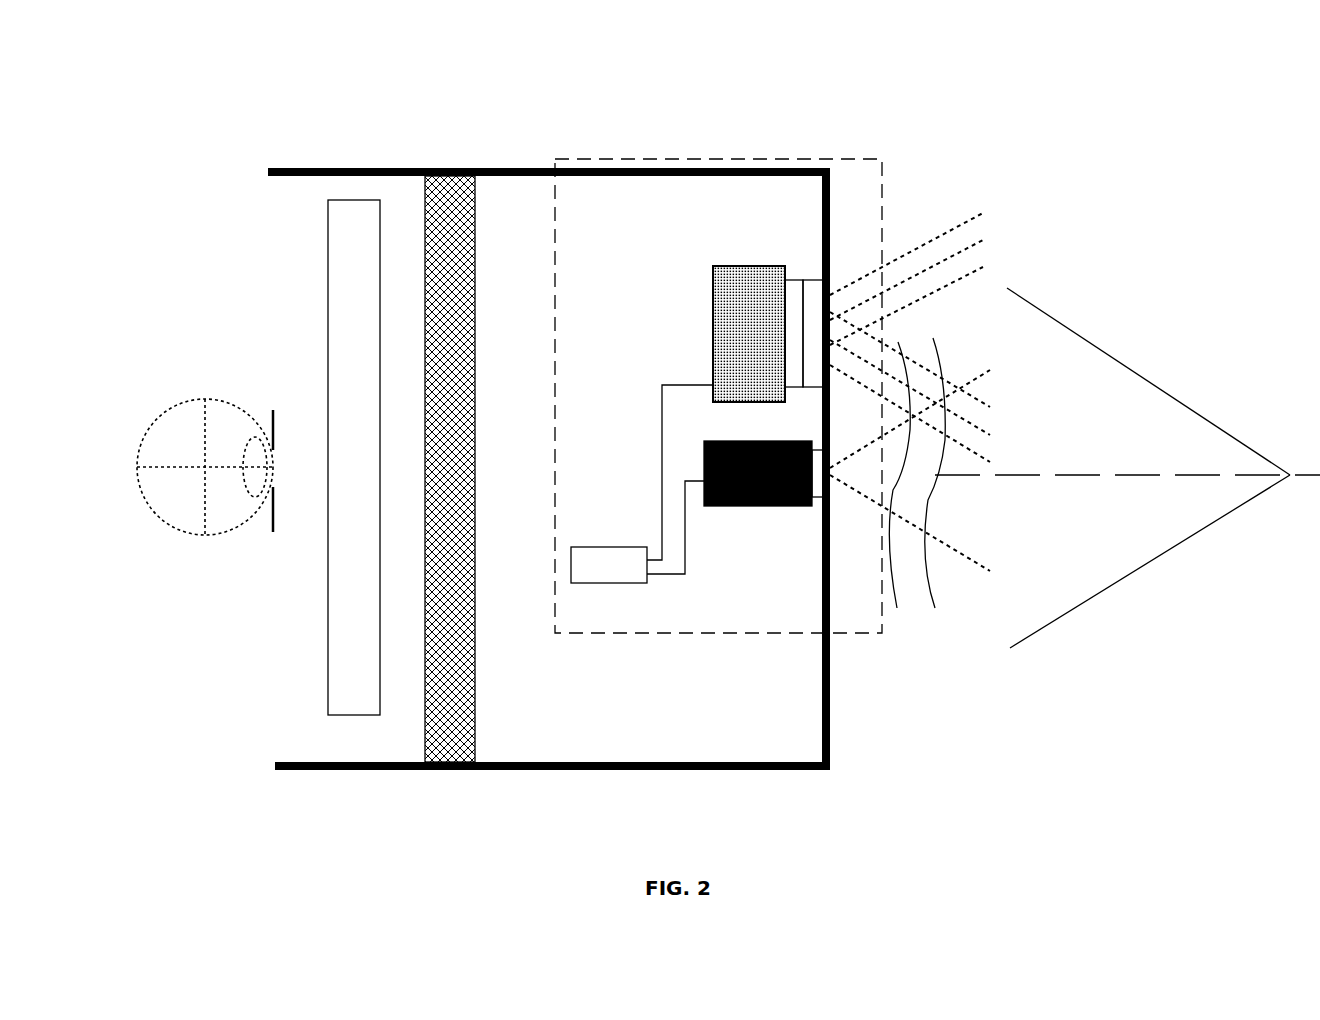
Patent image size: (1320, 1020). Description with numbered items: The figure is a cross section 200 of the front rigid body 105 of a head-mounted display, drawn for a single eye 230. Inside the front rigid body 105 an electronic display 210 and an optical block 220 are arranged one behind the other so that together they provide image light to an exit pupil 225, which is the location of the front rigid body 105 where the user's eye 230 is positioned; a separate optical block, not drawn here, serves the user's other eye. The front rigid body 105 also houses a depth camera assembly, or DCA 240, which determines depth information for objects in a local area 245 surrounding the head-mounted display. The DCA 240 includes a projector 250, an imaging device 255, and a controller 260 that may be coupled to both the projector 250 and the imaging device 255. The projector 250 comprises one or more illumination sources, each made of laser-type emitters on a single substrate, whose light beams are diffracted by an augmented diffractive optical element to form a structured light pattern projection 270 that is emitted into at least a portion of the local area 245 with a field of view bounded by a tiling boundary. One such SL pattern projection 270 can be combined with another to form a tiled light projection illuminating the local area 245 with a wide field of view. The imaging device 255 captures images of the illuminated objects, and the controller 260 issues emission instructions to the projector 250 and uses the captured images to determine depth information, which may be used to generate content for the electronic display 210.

The cross section 200 is at (159, 87).
The front rigid body 105 is at (790, 768).
The electronic display 210 is at (425, 225).
The optical block 220 is at (372, 718).
The exit pupil 225 is at (273, 410).
The eye 230 is at (170, 525).
The depth camera assembly (DCA) 240 is at (587, 159).
The local area 245 is at (1130, 552).
The projector 250 is at (755, 265).
The imaging device 255 is at (760, 508).
The controller 260 is at (582, 585).
The SL pattern projection 270 is at (938, 255).